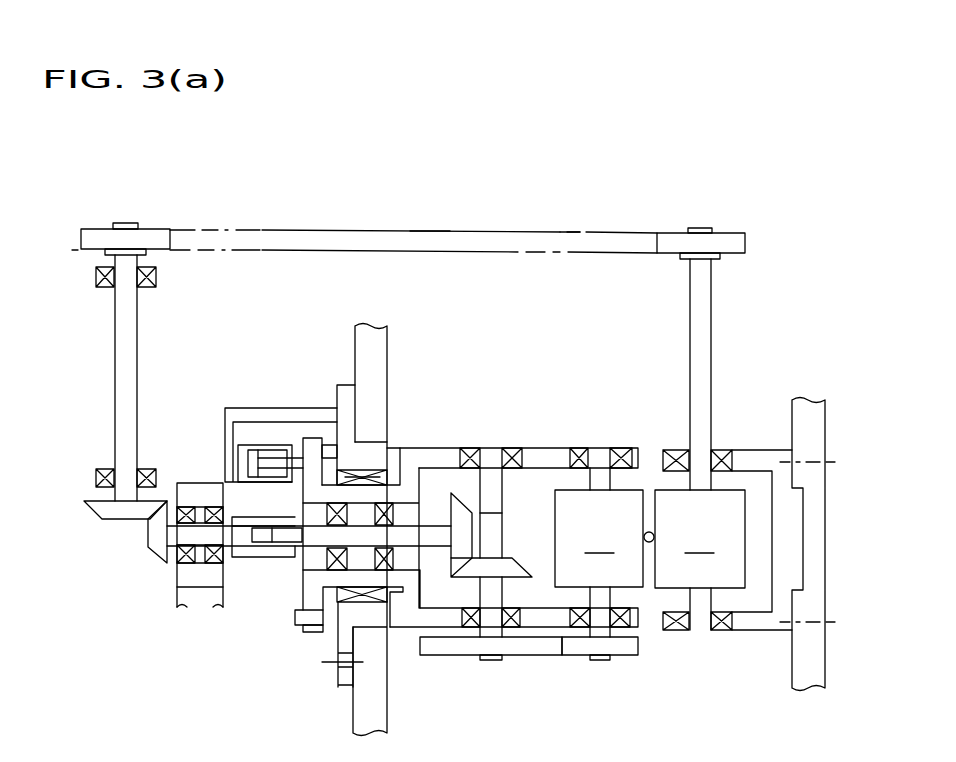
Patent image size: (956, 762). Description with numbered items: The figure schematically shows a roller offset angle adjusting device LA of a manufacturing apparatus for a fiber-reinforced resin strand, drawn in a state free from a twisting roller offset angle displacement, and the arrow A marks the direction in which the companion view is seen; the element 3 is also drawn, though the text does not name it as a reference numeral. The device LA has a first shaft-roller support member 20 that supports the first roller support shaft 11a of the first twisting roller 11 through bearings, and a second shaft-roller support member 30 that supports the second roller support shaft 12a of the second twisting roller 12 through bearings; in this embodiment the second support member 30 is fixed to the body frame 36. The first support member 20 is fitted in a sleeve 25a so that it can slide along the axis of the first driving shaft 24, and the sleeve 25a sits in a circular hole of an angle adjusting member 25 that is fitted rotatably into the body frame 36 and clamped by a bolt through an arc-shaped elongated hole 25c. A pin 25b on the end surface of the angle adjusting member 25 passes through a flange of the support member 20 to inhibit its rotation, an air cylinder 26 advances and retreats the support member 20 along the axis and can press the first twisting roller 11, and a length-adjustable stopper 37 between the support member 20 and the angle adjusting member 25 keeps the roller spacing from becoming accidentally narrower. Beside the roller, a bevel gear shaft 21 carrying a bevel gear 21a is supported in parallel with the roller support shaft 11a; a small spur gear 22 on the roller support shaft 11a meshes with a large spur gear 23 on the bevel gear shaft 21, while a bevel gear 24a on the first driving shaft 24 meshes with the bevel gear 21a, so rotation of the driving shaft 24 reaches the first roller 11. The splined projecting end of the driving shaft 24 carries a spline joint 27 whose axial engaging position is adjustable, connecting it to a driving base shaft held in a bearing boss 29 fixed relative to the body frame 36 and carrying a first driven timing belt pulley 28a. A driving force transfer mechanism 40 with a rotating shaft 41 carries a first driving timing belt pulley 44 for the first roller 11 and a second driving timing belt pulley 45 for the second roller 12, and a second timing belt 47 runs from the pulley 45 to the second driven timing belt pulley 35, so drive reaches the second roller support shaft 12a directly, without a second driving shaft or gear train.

The coupling 3 is at (652, 532).
The first twisting roller 11 is at (599, 538).
The first roller support shaft 11a is at (600, 455).
The second twisting roller 12 is at (700, 539).
The second roller support shaft 12a is at (690, 312).
The first shaft-roller support member 20 is at (525, 446).
The bevel gear shaft 21 is at (502, 497).
The bevel gear 21a is at (522, 568).
The small spur gear 22 is at (585, 657).
The large spur gear 23 is at (460, 655).
The first driving shaft 24 is at (433, 528).
The bevel gear 24a is at (462, 502).
The angle adjusting member 25 is at (337, 385).
The sleeve 25a is at (362, 467).
The pin 25b is at (295, 618).
The elongated hole 25c is at (337, 673).
The air cylinder 26 is at (263, 443).
The spline joint 27 is at (262, 558).
The first driven timing belt pulley 28a is at (152, 562).
The bearing boss 29 is at (200, 483).
The second shaft-roller support member 30 is at (750, 447).
The second driven timing belt pulley 35 is at (735, 233).
The body frame 36 is at (355, 350).
The length-adjustable stopper 37 is at (330, 443).
The driving force transfer mechanism 40 is at (278, 225).
The rotating shaft 41 is at (115, 392).
The first driving timing belt pulley 44 is at (122, 512).
The second driving timing belt pulley 45 is at (157, 228).
The second timing belt 47 is at (455, 232).
The roller offset angle adjusting device LA is at (570, 232).
The arrow A is at (199, 266).